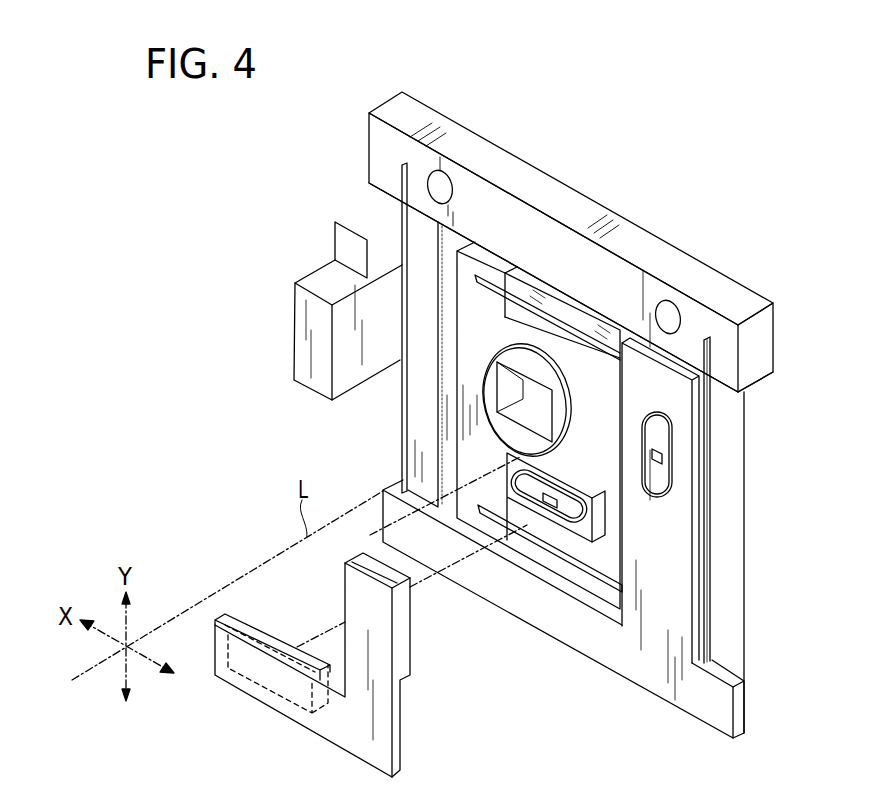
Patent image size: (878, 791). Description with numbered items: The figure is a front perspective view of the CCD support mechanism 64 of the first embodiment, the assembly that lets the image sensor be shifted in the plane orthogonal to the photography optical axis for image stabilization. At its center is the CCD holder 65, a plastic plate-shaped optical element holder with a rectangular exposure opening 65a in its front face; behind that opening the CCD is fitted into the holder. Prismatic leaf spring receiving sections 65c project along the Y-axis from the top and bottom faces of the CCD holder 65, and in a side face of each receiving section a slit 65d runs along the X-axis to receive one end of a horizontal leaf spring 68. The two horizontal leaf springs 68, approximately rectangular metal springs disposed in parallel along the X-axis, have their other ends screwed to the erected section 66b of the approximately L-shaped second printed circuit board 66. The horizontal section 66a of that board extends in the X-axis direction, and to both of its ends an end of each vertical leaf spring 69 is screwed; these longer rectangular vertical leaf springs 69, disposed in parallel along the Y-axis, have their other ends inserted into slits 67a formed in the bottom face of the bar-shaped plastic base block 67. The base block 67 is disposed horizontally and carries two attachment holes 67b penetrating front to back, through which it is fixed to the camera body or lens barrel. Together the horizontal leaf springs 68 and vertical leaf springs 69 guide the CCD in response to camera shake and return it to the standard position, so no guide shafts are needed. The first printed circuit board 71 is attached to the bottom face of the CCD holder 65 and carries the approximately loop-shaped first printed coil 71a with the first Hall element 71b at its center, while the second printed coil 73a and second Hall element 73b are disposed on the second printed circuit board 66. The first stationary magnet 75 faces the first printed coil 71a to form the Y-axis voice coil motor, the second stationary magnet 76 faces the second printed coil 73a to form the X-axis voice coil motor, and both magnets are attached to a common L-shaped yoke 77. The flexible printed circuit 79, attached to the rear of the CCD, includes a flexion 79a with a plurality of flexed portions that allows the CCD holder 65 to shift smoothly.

The CCD support mechanism 64 is at (474, 117).
The CCD holder 65 is at (606, 500).
The exposure opening 65a is at (540, 402).
The leaf spring receiving section 65c is at (466, 261).
The slit 65d is at (485, 280).
The second printed circuit board 66 is at (747, 712).
The horizontal section 66a is at (627, 673).
The erected section 66b is at (680, 412).
The base block 67 is at (750, 293).
The slit 67a is at (708, 370).
The attachment hole 67b is at (672, 313).
The horizontal leaf spring 68 is at (570, 305).
The vertical leaf spring 69 is at (402, 458).
The first printed circuit board 71 is at (606, 538).
The first printed coil 71a is at (517, 480).
The first Hall element 71b is at (598, 574).
The second printed coil 73a is at (672, 438).
The second Hall element 73b is at (662, 458).
The first stationary magnet 75 is at (307, 649).
The second stationary magnet 76 is at (408, 657).
The L-shaped yoke 77 is at (401, 746).
The flexible printed circuit 79 is at (300, 337).
The flexion 79a is at (310, 280).